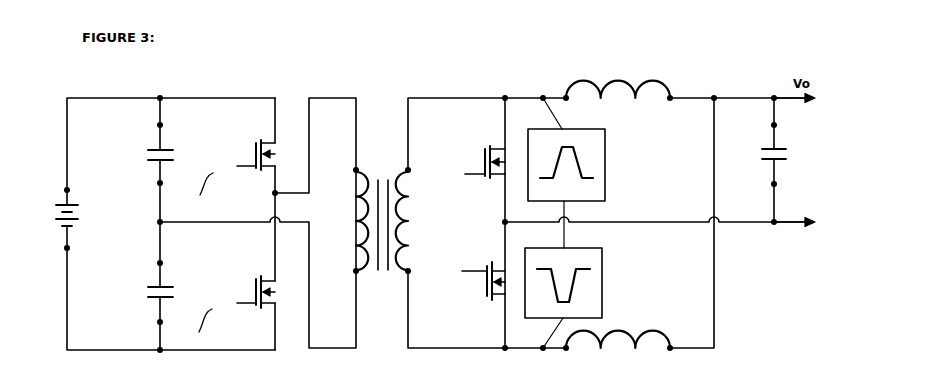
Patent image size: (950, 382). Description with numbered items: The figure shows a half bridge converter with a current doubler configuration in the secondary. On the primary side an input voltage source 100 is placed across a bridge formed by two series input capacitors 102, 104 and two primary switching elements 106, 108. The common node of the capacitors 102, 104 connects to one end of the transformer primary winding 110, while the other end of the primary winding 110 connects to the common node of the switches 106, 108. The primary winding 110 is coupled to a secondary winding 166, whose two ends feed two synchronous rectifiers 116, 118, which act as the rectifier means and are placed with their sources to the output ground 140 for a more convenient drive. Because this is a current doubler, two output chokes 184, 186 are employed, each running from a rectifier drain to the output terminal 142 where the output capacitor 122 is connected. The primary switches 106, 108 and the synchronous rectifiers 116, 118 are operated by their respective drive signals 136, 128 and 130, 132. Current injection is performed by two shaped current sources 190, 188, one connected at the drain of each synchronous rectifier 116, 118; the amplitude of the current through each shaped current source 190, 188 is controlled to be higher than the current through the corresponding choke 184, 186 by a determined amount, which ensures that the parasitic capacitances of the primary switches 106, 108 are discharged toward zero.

The input voltage source 100 is at (57, 215).
The input capacitor 102 is at (147, 154).
The input capacitor 104 is at (147, 297).
The primary switching element 106 is at (245, 152).
The primary switching element 108 is at (247, 292).
The primary winding 110 is at (354, 228).
The synchronous rectifier 116 is at (474, 155).
The synchronous rectifier 118 is at (474, 292).
The output capacitor 122 is at (778, 147).
The control signal VcQ2 for switch Q2 128 is at (205, 322).
The control signal VcSR1 for rectifier SR1 130 is at (464, 173).
The control signal VcSR2 for rectifier SR2 132 is at (462, 271).
The control signal VcQ1 for switch Q1 136 is at (205, 188).
The output ground 140 is at (778, 227).
The output voltage terminal Vo 142 is at (780, 102).
The transformer secondary winding L2 166 is at (412, 224).
The first output inductor Lo1 184 is at (614, 82).
The second output inductor Lo2 186 is at (643, 331).
The shaped current source 188 is at (602, 262).
The shaped current source 190 is at (605, 150).